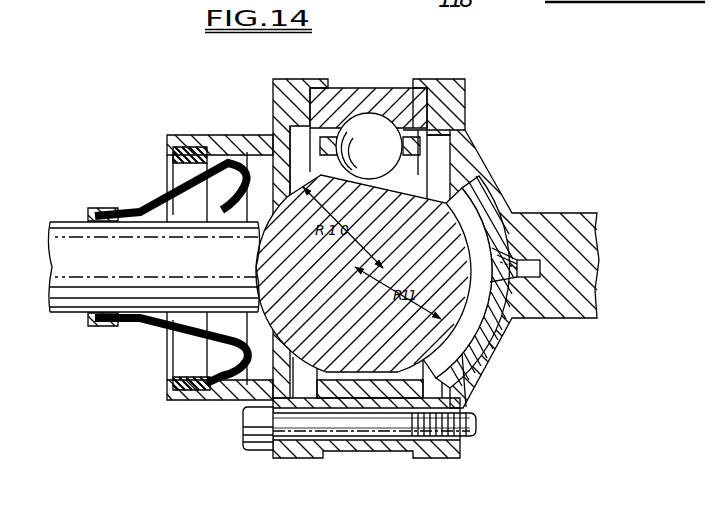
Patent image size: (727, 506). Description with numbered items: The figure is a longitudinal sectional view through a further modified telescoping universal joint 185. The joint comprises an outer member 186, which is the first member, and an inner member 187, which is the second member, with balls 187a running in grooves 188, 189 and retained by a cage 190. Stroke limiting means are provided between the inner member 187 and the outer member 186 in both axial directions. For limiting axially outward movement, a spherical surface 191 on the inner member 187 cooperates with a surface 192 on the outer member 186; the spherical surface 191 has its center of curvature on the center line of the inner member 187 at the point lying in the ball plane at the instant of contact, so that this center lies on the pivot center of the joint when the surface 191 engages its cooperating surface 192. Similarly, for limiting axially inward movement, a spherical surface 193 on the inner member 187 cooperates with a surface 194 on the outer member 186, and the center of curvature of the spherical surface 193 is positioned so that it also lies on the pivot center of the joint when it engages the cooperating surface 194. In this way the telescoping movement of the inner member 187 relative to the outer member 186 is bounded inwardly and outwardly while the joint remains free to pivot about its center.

The universal joint 185 is at (347, 82).
The outer member 186 is at (373, 91).
The inner member 187 is at (448, 243).
The balls 187a is at (412, 121).
The groove 188 is at (433, 118).
The groove 189 is at (434, 197).
The cage 190 is at (430, 150).
The spherical surface 191 is at (232, 153).
The cooperating surface 192 is at (288, 128).
The spherical surface 193 is at (473, 380).
The cooperating surface 194 is at (488, 332).